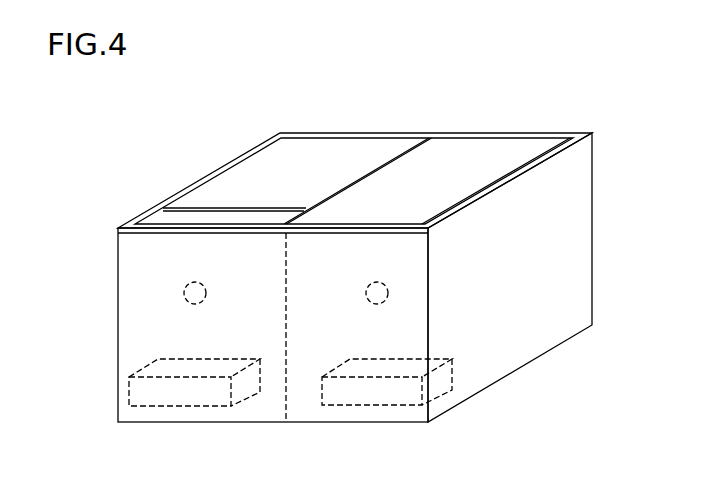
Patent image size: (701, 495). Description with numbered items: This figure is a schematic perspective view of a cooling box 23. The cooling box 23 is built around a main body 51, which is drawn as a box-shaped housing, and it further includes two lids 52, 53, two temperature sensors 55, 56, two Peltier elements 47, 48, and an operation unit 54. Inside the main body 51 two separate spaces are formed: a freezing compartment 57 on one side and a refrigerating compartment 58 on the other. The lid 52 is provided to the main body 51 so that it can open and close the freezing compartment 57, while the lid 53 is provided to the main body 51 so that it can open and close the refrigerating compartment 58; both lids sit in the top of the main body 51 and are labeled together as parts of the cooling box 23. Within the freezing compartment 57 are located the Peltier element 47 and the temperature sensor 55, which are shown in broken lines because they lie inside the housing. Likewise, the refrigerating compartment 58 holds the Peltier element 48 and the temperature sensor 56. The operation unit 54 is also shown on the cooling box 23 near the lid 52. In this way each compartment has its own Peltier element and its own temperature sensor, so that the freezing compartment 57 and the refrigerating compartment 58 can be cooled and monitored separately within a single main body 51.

The cooling box 23 is at (354, 129).
The Peltier element 47 is at (192, 393).
The Peltier element 48 is at (370, 395).
The main body 51 is at (418, 140).
The lid 52 is at (372, 150).
The lid 53 is at (365, 68).
The operation unit 54 is at (162, 218).
The temperature sensor 55 is at (183, 287).
The temperature sensor 56 is at (388, 288).
The freezing compartment 57 is at (133, 323).
The refrigerating compartment 58 is at (567, 222).